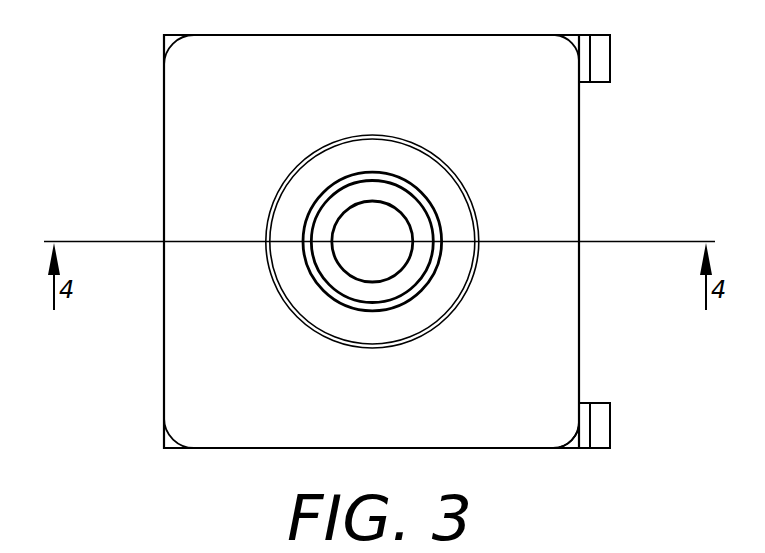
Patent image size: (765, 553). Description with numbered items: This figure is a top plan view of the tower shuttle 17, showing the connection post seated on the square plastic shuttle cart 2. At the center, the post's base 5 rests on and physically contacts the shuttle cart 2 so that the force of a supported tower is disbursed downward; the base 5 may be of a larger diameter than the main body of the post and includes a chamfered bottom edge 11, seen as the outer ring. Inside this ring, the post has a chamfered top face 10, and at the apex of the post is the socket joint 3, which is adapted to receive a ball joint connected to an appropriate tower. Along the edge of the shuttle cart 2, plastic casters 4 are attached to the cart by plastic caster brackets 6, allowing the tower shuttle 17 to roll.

The tower shuttle 17 is at (100, 120).
The shuttle cart 2 is at (240, 120).
The socket joint 3 is at (370, 265).
The plastic caster 4 is at (603, 59).
The base 5 is at (376, 160).
The plastic caster bracket 6 is at (578, 442).
The chamfered top face 10 is at (314, 274).
The chamfered bottom edge 11 is at (470, 280).